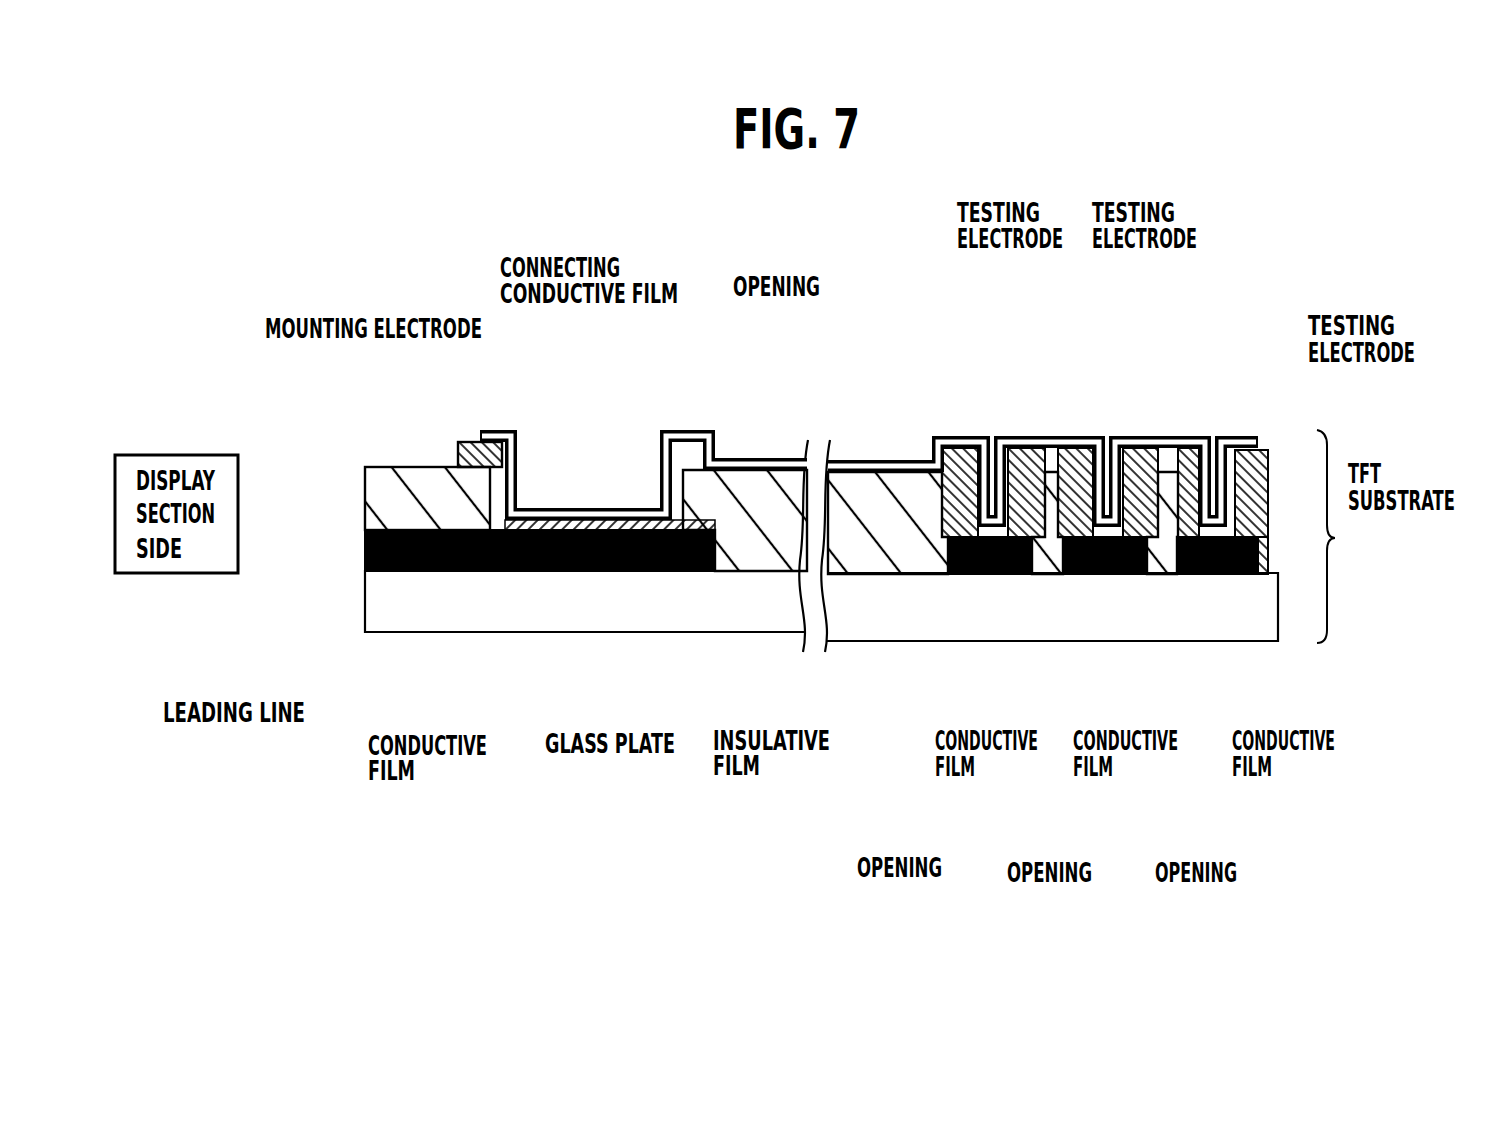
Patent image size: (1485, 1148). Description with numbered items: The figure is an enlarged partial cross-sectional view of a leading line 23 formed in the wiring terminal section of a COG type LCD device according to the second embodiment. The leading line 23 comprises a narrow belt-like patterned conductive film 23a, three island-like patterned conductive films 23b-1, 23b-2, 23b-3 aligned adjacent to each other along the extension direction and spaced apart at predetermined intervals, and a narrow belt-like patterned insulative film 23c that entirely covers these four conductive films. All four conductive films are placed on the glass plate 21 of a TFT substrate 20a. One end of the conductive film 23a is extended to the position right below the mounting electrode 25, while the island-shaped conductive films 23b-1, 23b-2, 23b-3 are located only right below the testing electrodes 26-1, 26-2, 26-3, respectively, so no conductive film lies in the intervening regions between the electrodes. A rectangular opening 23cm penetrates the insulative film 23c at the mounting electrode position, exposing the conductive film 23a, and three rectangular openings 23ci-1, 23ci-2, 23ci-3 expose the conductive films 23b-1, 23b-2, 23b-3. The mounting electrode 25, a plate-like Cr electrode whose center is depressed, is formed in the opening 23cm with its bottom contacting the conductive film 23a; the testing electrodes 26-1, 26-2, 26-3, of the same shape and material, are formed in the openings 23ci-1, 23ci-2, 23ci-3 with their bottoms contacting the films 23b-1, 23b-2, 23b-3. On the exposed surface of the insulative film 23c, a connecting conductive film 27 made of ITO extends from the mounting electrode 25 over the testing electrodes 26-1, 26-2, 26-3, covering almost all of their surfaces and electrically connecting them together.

The TFT substrate 20a is at (1347, 536).
The glass plate 21 is at (598, 622).
The leading line 23 is at (358, 548).
The conductive film 23a is at (403, 570).
The conductive film 23b-1 is at (977, 577).
The conductive film 23b-2 is at (1098, 540).
The conductive film 23b-3 is at (1247, 577).
The insulative film 23c is at (365, 513).
The opening 23cm is at (707, 510).
The opening 23ci-1 is at (947, 513).
The opening 23ci-2 is at (1085, 515).
The opening 23ci-3 is at (1183, 517).
The mounting electrode 25 is at (458, 452).
The testing electrode 26-1 is at (1026, 450).
The testing electrode 26-2 is at (1130, 450).
The testing electrode 26-3 is at (1270, 475).
The connecting conductive film 27 is at (505, 436).